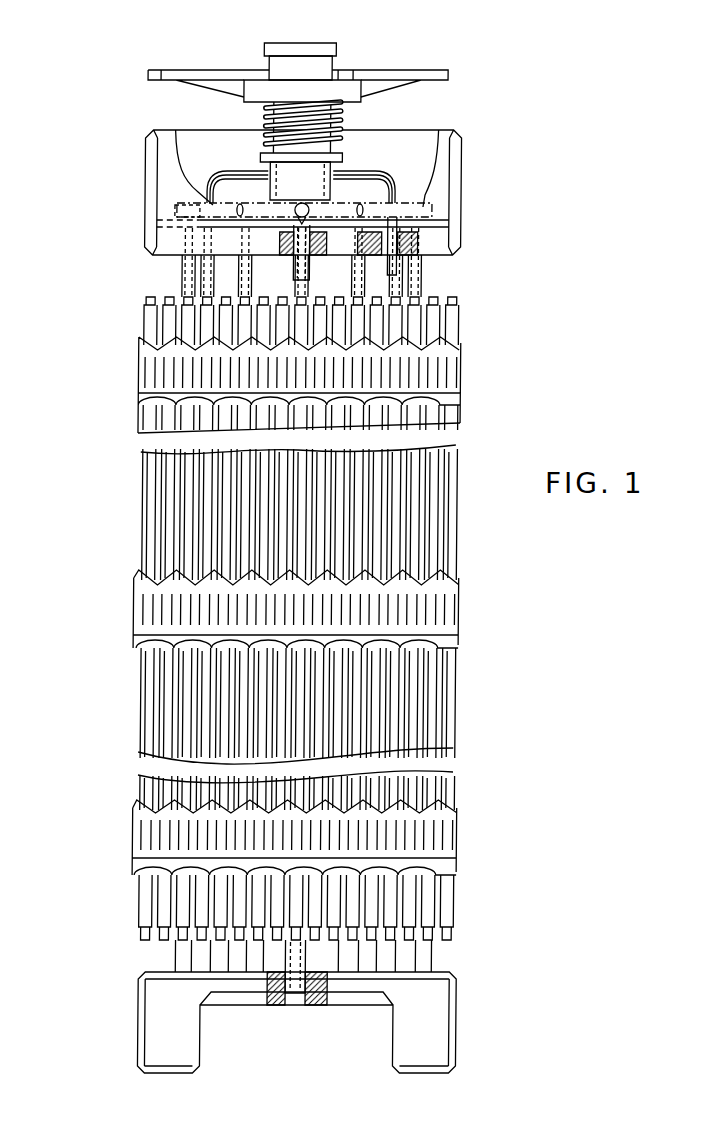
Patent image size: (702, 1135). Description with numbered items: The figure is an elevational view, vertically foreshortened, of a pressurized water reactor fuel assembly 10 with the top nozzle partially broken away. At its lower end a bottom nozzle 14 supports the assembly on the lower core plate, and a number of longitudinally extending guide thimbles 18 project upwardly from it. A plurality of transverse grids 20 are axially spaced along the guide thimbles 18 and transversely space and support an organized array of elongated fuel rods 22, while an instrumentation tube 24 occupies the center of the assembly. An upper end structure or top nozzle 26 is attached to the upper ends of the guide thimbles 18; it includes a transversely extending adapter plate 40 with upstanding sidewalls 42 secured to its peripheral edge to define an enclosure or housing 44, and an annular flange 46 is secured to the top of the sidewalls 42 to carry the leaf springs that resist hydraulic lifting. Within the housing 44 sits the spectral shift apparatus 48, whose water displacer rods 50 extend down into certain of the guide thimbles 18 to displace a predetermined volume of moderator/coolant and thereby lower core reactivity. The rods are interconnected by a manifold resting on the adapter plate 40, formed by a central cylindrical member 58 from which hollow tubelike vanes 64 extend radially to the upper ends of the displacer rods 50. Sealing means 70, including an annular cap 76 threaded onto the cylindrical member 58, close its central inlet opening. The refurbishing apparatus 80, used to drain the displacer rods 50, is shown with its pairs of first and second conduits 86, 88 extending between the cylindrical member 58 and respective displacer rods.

The fuel assembly 10 is at (74, 260).
The bottom nozzle 14 is at (445, 1026).
The guide thimbles 18 is at (427, 263).
The transverse grids 20 is at (464, 380).
The fuel rods 22 is at (466, 418).
The instrumentation tube 24 is at (297, 1006).
The top nozzle 26 is at (468, 196).
The adapter plate 40 is at (328, 256).
The sidewalls 42 is at (337, 131).
The enclosure or housing 44 is at (414, 133).
The annular flange 46 is at (160, 130).
The spectral shift apparatus 48 is at (418, 194).
The water displacer rods 50 is at (150, 218).
The central cylindrical member 58 is at (315, 190).
The hollow tubelike vanes 64 is at (434, 212).
The sealing means 70 is at (338, 43).
The annular cap 76 is at (265, 48).
The refurbishing apparatus 80 is at (222, 170).
The first conduit 86 is at (246, 171).
The second conduit 88 is at (204, 178).